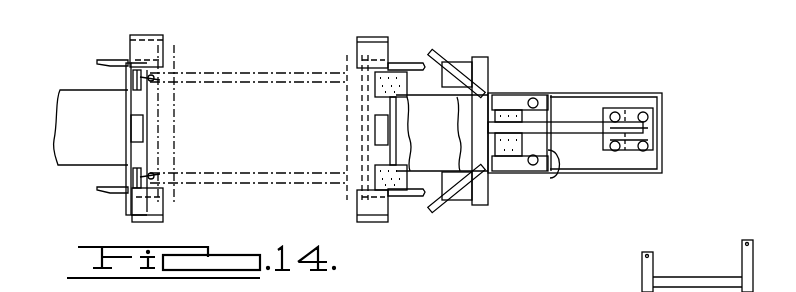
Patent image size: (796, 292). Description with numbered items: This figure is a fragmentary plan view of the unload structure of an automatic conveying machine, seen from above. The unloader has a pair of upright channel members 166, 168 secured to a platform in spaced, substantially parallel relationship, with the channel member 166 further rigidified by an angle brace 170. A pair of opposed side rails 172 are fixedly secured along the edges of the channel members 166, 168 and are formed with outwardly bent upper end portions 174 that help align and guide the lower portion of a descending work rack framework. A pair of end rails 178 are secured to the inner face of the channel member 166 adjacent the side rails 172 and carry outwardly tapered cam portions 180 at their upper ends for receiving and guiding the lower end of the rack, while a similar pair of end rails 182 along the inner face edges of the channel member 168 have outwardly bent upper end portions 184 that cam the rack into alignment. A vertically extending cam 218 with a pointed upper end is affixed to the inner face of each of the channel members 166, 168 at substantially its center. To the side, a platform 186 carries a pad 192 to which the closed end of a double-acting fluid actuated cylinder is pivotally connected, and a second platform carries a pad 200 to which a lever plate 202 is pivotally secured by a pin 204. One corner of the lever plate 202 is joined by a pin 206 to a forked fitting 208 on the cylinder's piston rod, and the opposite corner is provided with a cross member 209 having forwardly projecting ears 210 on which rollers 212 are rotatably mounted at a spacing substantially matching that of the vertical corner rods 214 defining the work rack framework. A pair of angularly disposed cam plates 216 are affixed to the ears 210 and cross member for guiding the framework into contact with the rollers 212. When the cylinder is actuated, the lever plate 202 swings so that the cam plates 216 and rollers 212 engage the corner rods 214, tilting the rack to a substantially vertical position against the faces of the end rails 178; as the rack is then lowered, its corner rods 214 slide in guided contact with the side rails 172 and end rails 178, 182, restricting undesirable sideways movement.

The channel member 166 is at (115, 198).
The channel member 168 is at (404, 93).
The angle brace 170 is at (62, 165).
The side rails 172 is at (158, 68).
The upper end portions 174 is at (162, 42).
The end rails 178 is at (147, 94).
The cam portions 180 is at (130, 78).
The end rails 182 is at (372, 88).
The upper end portions 184 is at (431, 134).
The platform 186 is at (582, 93).
The pad 192 is at (650, 126).
The pad 200 is at (550, 176).
The lever plate 202 is at (582, 130).
The pin 204 is at (518, 93).
The pin 206 is at (624, 155).
The forked fitting 208 is at (649, 152).
The cross member 209 is at (484, 205).
The ears 210 is at (437, 55).
The rollers 212 is at (439, 134).
The corner rods 214 is at (165, 86).
The cam plates 216 is at (487, 75).
The cam 218 is at (147, 130).